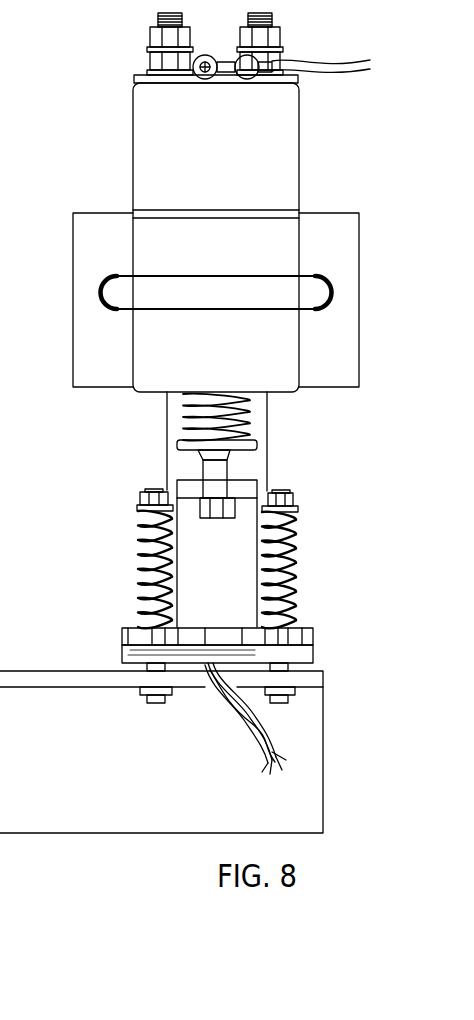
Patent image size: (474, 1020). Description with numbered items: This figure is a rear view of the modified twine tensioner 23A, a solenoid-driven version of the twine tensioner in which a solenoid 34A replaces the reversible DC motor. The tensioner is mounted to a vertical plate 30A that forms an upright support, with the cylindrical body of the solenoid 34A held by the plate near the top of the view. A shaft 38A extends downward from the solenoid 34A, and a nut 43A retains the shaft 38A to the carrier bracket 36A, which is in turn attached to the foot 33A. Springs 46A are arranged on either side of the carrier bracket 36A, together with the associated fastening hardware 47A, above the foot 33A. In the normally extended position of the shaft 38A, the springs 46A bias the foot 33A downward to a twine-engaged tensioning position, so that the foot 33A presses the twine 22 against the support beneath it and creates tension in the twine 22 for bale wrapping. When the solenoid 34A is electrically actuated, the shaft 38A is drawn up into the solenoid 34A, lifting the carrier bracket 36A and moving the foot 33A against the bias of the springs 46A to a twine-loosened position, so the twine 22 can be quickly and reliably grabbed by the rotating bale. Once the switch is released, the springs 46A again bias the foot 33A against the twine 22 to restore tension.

The modified twine tensioner 23A is at (79, 140).
The solenoid 34A is at (300, 162).
The vertical plate 30A is at (73, 251).
The carrier bracket 36A is at (187, 486).
The shaft 38A is at (232, 475).
The nut 43A is at (233, 512).
The bolt 47A is at (140, 500).
The springs 46A is at (140, 552).
The foot 33A is at (313, 650).
The twine 22 is at (267, 740).